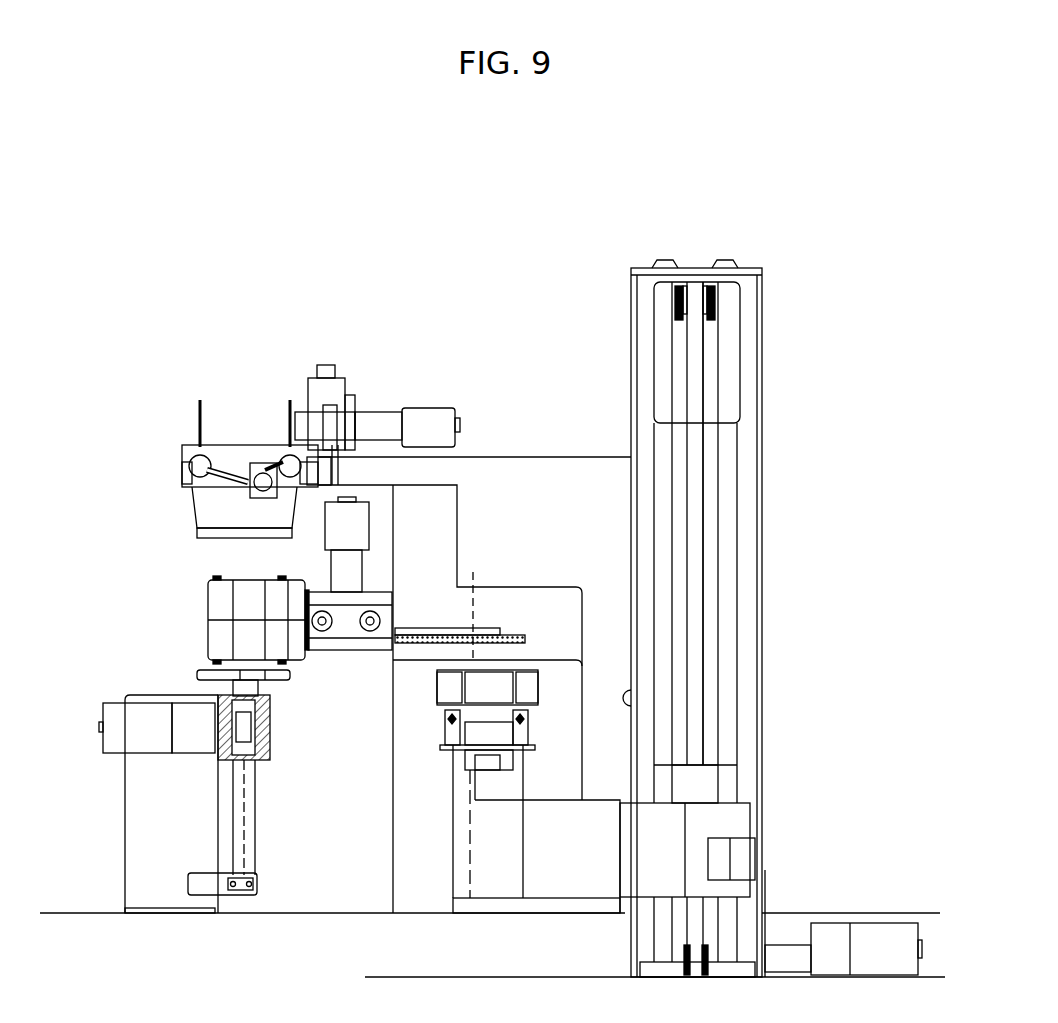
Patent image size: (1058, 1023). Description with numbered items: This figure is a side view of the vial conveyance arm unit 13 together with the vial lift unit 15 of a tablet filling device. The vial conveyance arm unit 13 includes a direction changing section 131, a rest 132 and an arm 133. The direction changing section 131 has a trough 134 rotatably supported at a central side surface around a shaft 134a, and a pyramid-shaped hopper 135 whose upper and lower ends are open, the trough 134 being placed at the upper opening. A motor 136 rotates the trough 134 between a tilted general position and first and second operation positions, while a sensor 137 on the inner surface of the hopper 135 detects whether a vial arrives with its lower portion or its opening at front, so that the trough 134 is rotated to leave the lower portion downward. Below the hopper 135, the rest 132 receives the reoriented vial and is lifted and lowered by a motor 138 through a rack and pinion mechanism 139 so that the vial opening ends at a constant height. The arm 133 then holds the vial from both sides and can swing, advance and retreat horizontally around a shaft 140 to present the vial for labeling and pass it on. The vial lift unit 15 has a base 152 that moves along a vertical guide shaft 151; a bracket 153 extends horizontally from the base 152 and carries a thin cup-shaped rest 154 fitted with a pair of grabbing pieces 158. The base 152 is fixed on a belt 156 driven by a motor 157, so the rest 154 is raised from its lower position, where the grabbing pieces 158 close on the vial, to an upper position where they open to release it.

The vial lift unit 15 is at (688, 213).
The vial conveyance arm unit 13 is at (328, 308).
The direction changing section 131 is at (155, 470).
The rest 132 is at (203, 668).
The arm 133 is at (197, 605).
The trough 134 is at (200, 418).
The shaft 134a is at (290, 428).
The hopper 135 is at (192, 518).
The motor 136 is at (430, 408).
The sensor 137 is at (265, 505).
The motor 138 is at (118, 750).
The rack and pinion mechanism 139 is at (262, 762).
The shaft 140 is at (480, 575).
The guide shaft 151 is at (665, 600).
The base 152 is at (745, 812).
The bracket 153 is at (570, 812).
The rest 154 is at (455, 720).
The belt 156 is at (698, 452).
The motor 157 is at (880, 935).
The grabbing pieces 158 is at (533, 680).